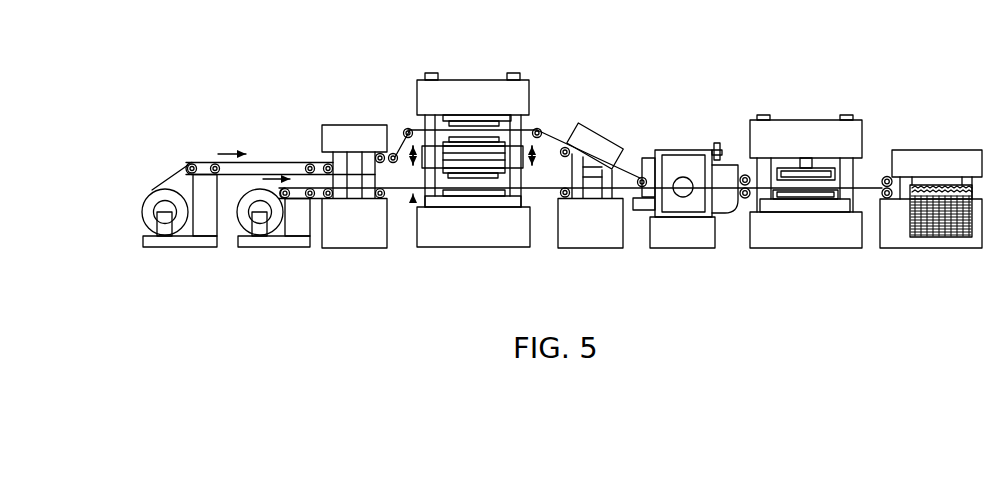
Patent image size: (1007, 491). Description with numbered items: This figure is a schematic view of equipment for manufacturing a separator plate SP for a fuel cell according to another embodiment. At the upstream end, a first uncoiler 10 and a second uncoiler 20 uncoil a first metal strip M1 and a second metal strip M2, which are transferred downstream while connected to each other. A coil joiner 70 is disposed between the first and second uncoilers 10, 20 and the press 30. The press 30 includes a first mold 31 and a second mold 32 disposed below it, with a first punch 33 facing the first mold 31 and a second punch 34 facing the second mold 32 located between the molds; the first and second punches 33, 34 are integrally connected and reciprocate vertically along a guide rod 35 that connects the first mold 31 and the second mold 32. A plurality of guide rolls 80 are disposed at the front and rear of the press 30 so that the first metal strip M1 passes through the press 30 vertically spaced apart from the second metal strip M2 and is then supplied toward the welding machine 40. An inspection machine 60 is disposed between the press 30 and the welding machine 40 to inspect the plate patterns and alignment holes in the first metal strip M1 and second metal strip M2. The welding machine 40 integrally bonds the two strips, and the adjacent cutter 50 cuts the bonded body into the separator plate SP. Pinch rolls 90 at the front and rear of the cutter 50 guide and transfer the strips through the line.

The first uncoiler 10 is at (183, 250).
The second uncoiler 20 is at (277, 250).
The press 30 is at (471, 149).
The first mold 31 is at (462, 117).
The second mold 32 is at (476, 196).
The first punch 33 is at (492, 128).
The second punch 34 is at (457, 197).
The guide rod 35 is at (513, 208).
The welding machine 40 is at (679, 142).
The cutter 50 is at (804, 114).
The inspection machine 60 is at (601, 130).
The coil joiner 70 is at (337, 122).
The guide roll 80 is at (383, 153).
The pinch roll 90 is at (744, 174).
The first metal strip M1 is at (201, 157).
The second metal strip M2 is at (413, 207).
The separator plate SP is at (939, 182).